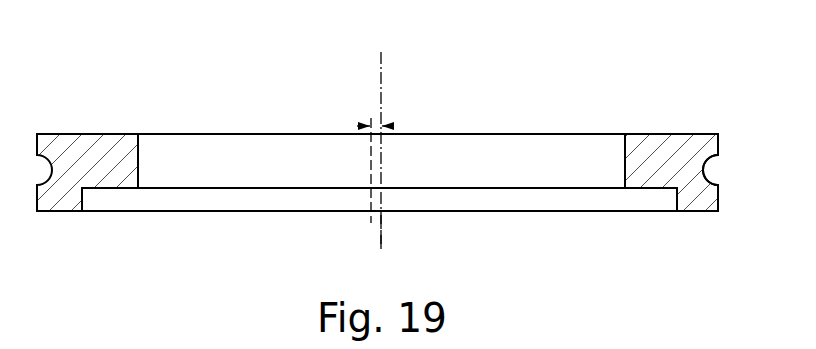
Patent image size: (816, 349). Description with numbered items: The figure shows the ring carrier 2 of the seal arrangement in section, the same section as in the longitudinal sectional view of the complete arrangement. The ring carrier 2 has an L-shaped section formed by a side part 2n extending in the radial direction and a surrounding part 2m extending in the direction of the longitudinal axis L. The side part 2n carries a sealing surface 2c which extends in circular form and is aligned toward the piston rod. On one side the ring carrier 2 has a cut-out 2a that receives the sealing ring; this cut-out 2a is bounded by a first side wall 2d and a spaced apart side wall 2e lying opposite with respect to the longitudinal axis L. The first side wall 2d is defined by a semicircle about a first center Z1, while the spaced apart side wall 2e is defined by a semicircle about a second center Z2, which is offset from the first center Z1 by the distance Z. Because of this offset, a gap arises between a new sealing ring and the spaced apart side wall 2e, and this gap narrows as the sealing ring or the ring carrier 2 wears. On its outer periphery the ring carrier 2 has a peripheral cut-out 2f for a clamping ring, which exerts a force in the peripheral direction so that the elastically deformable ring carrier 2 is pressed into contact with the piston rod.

The ring carrier 2 is at (642, 91).
The side part 2n is at (97, 152).
The cut-out 2a is at (175, 198).
The sealing surface 2c is at (141, 157).
The spaced apart side wall 2e is at (84, 200).
The first side wall 2d is at (676, 202).
The surrounding part 2m is at (61, 193).
The outwardly peripheral cut-out 2f is at (703, 167).
The longitudinal axis L is at (383, 82).
The distance Z is at (386, 122).
The first center Z1 is at (383, 224).
The second center Z2 is at (371, 225).